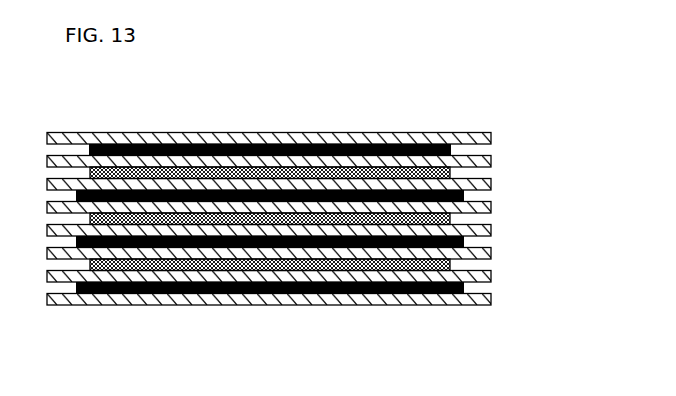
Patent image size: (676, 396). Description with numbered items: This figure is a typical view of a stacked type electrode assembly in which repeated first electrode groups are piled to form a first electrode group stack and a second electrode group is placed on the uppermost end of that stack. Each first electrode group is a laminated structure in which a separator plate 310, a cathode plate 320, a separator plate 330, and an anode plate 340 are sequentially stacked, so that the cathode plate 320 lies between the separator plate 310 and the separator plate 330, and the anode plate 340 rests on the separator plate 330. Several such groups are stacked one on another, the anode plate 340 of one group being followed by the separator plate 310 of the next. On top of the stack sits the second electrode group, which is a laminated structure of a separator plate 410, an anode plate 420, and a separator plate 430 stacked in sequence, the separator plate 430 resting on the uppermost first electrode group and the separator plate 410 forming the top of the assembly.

The separator plate 410 is at (491, 138).
The anode plate 420 is at (452, 150).
The separator plate 430 is at (491, 162).
The anode plate 340 is at (451, 263).
The separator plate 330 is at (491, 275).
The cathode plate 320 is at (464, 288).
The separator plate 310 is at (491, 300).